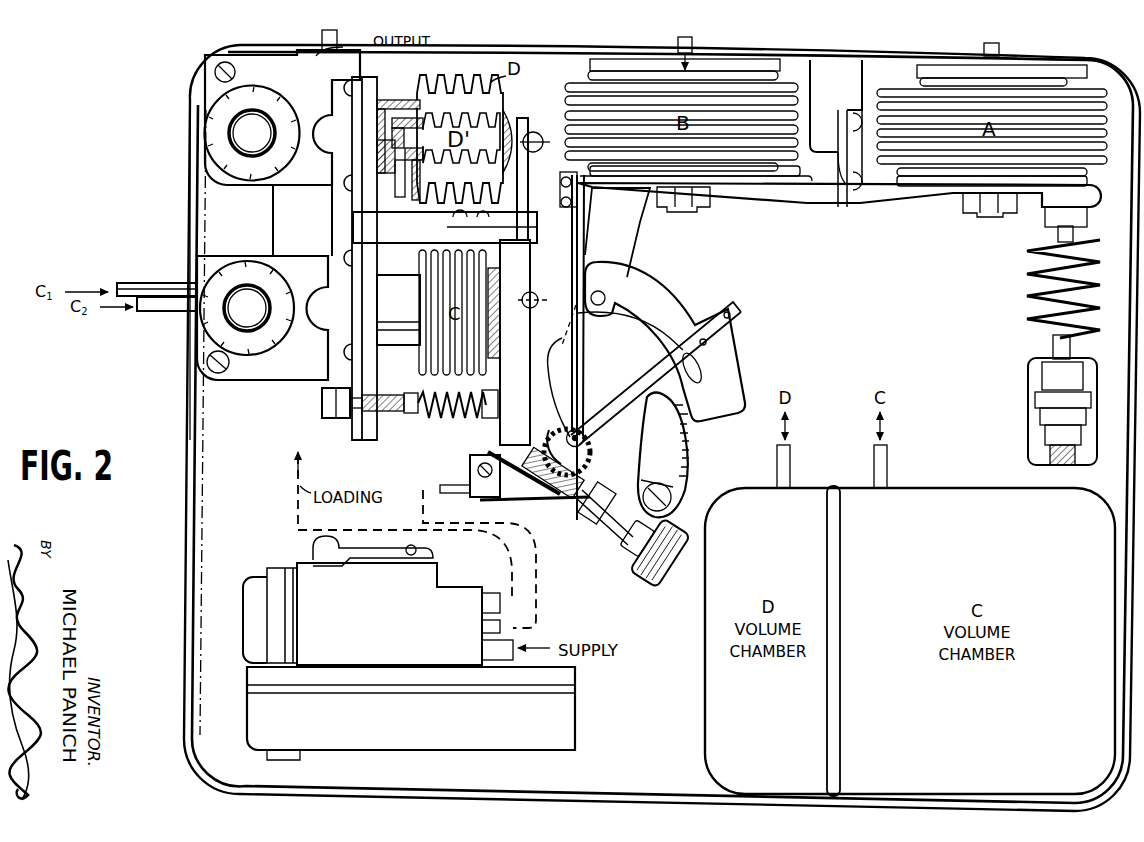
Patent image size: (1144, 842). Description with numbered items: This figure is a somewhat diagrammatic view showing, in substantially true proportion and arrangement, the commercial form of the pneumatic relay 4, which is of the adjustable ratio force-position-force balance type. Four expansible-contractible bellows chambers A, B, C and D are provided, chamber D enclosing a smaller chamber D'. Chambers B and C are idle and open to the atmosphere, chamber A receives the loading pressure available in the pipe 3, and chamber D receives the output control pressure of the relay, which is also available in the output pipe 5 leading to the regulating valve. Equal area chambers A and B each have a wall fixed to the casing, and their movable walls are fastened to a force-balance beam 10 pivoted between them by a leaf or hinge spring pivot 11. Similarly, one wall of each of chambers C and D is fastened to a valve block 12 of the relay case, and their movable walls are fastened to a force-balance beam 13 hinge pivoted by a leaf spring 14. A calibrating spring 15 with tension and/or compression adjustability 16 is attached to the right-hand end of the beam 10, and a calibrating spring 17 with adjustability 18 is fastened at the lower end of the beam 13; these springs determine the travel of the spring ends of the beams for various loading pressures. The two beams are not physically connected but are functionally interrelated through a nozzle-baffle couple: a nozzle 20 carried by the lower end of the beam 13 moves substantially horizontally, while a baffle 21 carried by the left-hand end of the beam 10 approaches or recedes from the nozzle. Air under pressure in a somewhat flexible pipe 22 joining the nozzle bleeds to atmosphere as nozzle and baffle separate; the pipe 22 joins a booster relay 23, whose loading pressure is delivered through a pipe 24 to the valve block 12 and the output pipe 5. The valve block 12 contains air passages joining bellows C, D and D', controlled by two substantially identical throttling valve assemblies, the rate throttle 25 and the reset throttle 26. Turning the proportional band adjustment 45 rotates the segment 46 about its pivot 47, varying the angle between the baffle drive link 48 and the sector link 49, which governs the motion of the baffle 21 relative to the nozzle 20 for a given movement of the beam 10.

The pipe 3 is at (297, 35).
The relay 4 is at (190, 130).
The output pipe 5 is at (545, 305).
The force-balance beam 10 is at (893, 198).
The leaf or hinge spring pivot 11 is at (836, 160).
The valve block 12 is at (291, 231).
The force-balance beam 13 is at (528, 186).
The leaf spring 14 is at (495, 216).
The calibrating spring 15 is at (1027, 281).
The tension and/or compression adjustability 16 is at (1030, 425).
The calibrating spring 17 is at (457, 420).
The adjustability 18 is at (343, 422).
The nozzle 20 is at (556, 502).
The baffle 21 is at (585, 483).
The pipe 22 is at (455, 488).
The booster relay 23 is at (390, 635).
The pipe 24 is at (297, 510).
The throttling valve assembly (Rate throttle) 25 is at (240, 143).
The throttling valve assembly (Reset throttle) 26 is at (235, 318).
The proportional band adjustment 45 is at (648, 586).
The segment 46 is at (742, 370).
The pivot 47 is at (548, 432).
The baffle drive link 48 is at (552, 342).
The sector link 49 is at (632, 383).